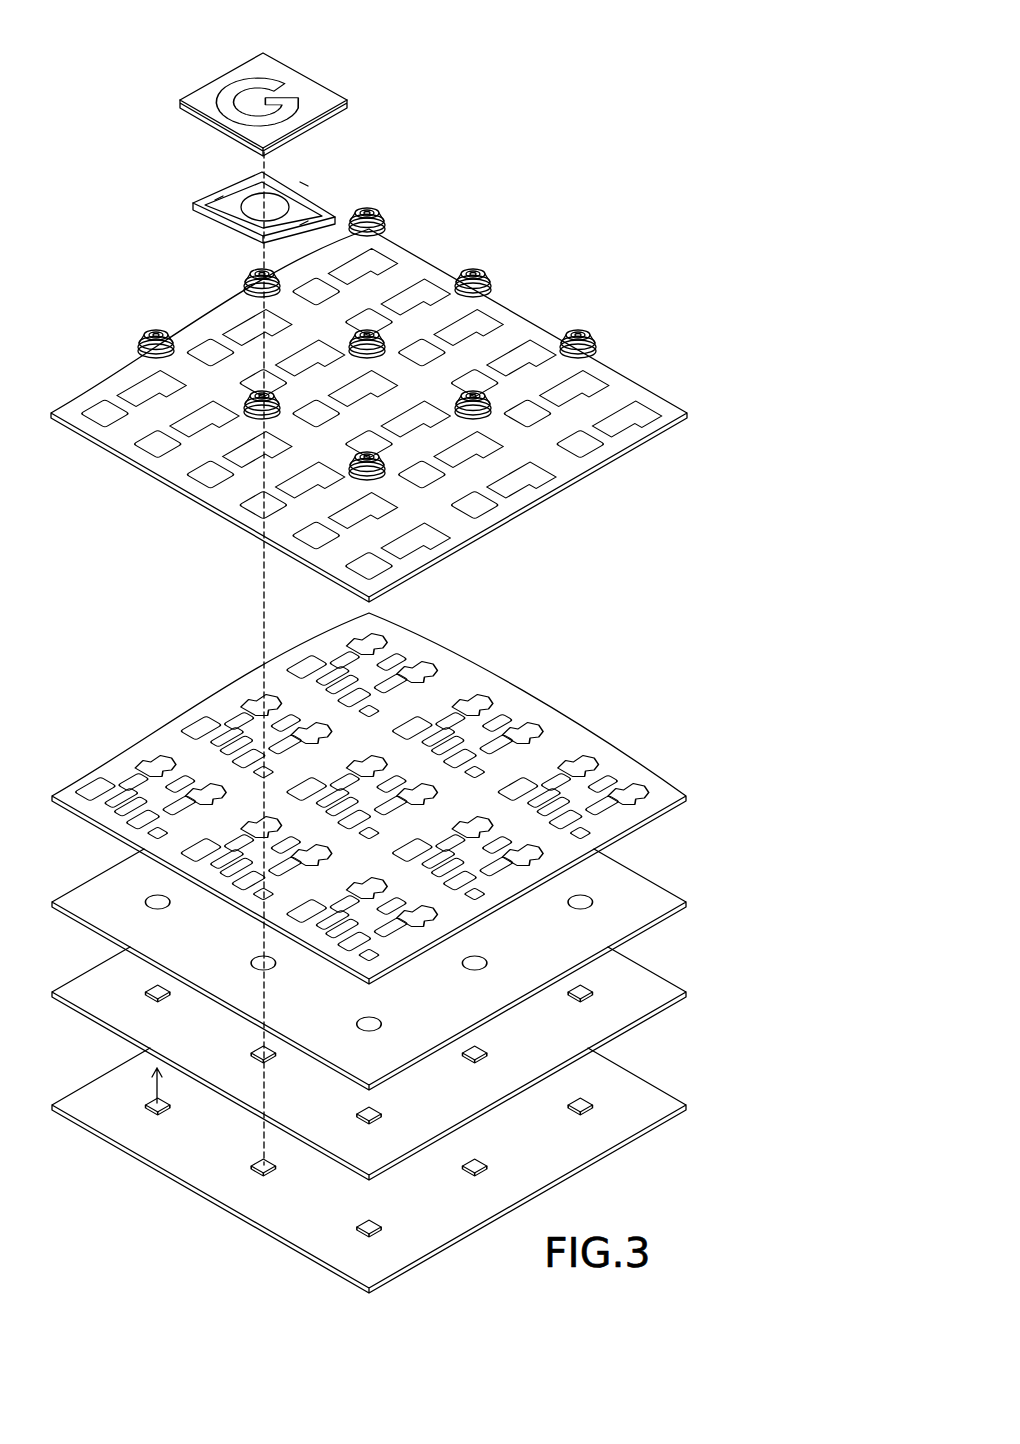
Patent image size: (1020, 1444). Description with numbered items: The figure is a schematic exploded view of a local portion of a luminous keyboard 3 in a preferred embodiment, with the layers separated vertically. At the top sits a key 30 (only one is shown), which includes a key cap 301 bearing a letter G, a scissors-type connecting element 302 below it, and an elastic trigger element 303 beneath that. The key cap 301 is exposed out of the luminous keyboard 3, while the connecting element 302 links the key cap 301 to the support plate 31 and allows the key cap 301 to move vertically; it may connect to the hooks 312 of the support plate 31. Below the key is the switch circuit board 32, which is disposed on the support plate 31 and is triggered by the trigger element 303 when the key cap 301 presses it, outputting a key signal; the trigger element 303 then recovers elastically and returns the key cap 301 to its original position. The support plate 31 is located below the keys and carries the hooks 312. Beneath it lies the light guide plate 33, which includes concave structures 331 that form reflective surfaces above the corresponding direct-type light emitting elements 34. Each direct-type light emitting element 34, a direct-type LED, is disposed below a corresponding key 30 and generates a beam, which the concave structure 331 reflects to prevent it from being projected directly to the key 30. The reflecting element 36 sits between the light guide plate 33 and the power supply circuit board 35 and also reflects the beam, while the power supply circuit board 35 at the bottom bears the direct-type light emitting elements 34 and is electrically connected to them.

The luminous keyboard 3 is at (480, 94).
The key 30 is at (618, 170).
The key cap 301 is at (283, 78).
The connecting element 302 is at (222, 190).
The trigger element 303 is at (150, 328).
The switch circuit board 32 is at (628, 386).
The support plate 31 is at (369, 798).
The hook 312 is at (575, 757).
The light guide plate 33 is at (372, 930).
The concave structure 331 is at (245, 969).
The reflecting element 36 is at (637, 980).
The power supply circuit board 35 is at (372, 1134).
The direct-type light emitting element 34 is at (150, 1104).